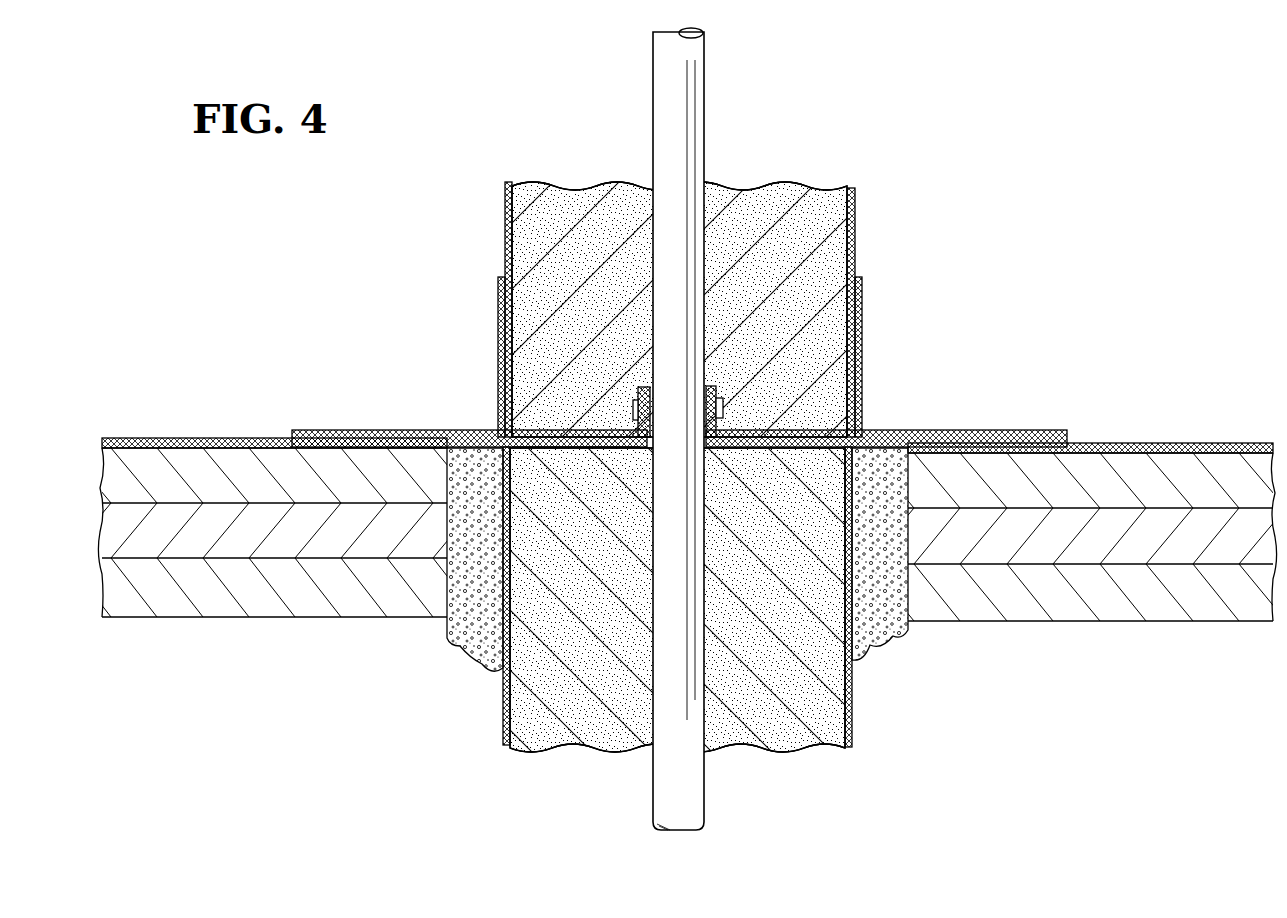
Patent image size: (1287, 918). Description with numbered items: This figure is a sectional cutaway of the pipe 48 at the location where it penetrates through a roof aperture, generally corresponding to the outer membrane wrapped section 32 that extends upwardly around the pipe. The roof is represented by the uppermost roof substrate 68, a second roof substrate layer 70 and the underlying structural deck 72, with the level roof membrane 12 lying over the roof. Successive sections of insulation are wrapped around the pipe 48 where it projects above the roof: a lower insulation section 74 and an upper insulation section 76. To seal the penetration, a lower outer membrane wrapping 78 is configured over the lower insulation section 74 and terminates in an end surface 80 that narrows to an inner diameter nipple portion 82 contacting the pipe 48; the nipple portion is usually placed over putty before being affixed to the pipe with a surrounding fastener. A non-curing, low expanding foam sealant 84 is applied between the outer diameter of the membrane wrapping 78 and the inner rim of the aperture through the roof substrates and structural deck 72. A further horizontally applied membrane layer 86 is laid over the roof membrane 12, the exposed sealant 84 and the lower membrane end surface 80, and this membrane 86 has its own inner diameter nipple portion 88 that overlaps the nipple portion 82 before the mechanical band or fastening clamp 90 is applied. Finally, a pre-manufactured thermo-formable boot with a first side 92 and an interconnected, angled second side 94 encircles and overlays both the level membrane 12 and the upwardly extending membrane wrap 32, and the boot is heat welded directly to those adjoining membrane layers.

The roof membrane 12 is at (213, 440).
The outer membrane wrapped section 32 is at (505, 195).
The pipe 48 is at (667, 63).
The uppermost roof substrate 68 is at (113, 467).
The roof substrate layer 70 is at (120, 524).
The structural deck 72 is at (112, 580).
The lower insulation section 74 is at (600, 740).
The upper insulation section 76 is at (573, 188).
The lower outer membrane wrapping 78 is at (502, 705).
The end surface 80 is at (603, 450).
The nipple portion 82 is at (712, 398).
The foam sealant 84 is at (460, 643).
The horizontally applied membrane layer 86 is at (800, 423).
The inner diameter nipple portion 88 is at (640, 392).
The fastening clamp 90 is at (634, 412).
The first side of boot 92 is at (498, 283).
The second side of boot 94 is at (355, 430).